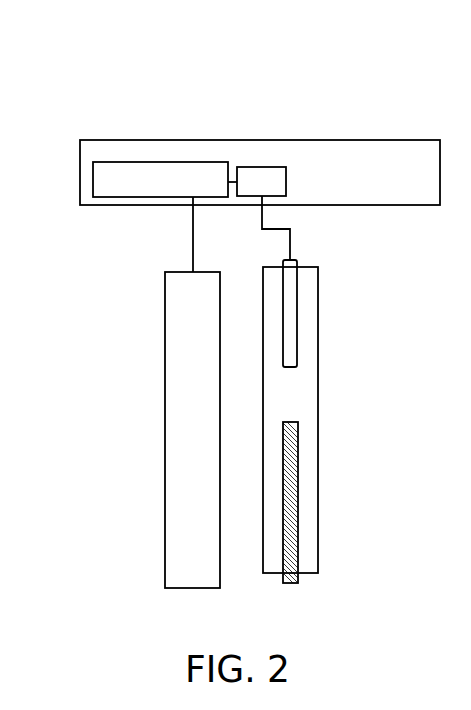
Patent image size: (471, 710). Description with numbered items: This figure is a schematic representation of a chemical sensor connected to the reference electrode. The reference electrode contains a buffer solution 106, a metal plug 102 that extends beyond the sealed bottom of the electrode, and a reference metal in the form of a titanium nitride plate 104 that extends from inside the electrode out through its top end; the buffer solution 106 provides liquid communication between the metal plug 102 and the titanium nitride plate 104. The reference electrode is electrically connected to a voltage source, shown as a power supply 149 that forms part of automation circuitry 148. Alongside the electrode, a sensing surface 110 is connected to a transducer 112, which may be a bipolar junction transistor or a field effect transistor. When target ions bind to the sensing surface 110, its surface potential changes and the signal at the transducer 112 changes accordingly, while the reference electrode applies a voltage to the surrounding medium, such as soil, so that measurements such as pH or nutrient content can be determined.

The metal plug 102 is at (297, 530).
The titanium nitride plate 104 is at (297, 338).
The buffer solution 106 is at (302, 403).
The sensing surface 110 is at (182, 480).
The transducer 112 is at (123, 162).
The automation circuitry 148 is at (345, 140).
The power supply 149 is at (270, 167).